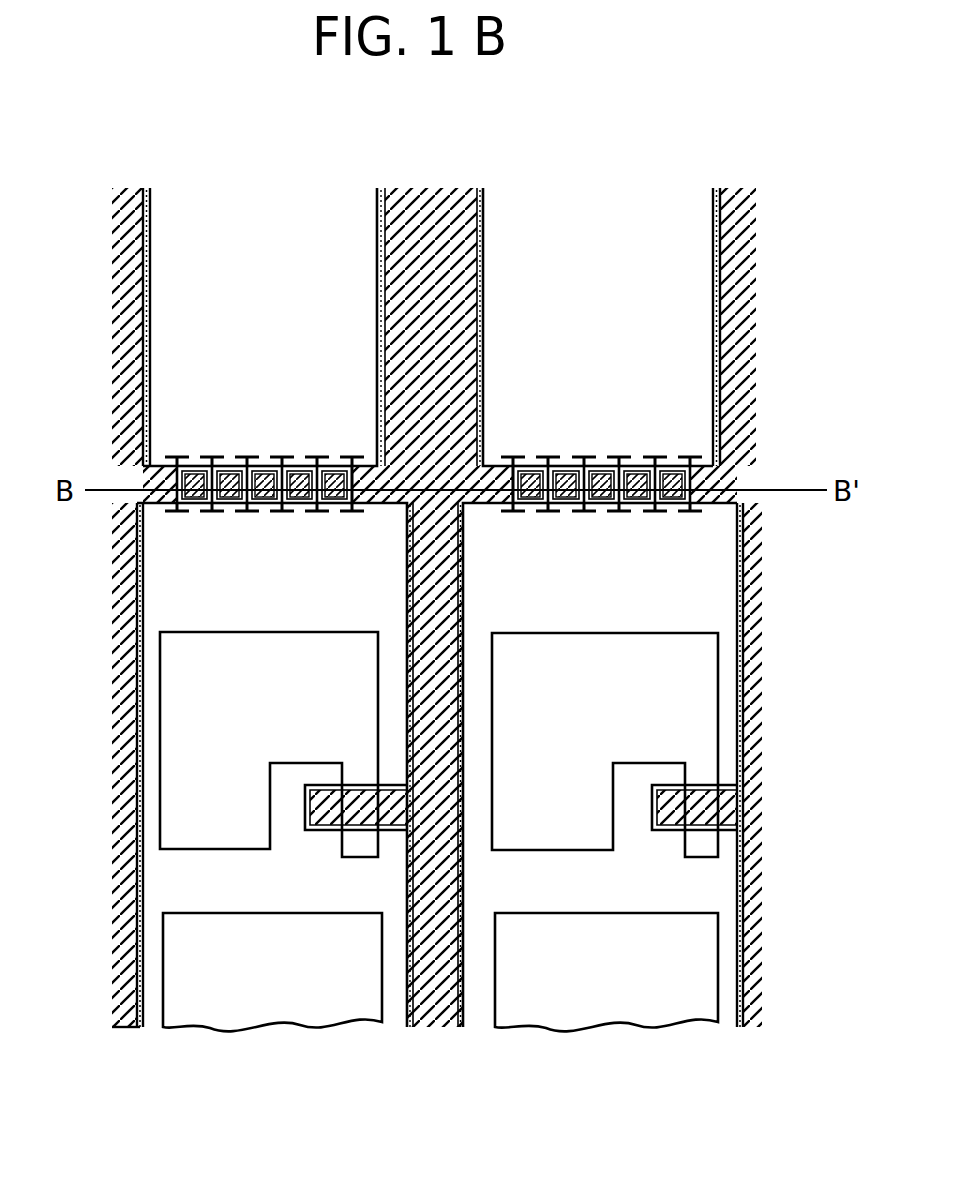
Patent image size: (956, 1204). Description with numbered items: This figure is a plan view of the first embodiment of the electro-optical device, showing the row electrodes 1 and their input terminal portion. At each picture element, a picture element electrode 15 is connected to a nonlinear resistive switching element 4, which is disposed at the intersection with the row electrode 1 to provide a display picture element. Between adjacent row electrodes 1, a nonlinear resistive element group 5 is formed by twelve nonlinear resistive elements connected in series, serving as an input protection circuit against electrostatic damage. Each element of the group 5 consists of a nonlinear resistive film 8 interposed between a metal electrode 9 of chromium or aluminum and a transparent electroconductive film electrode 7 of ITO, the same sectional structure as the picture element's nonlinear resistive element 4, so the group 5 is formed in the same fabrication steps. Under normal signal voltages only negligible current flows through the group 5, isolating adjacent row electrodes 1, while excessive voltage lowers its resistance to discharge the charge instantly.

The row electrode 1 is at (151, 237).
The nonlinear resistive switching element 4 is at (325, 783).
The nonlinear resistive element group 5 is at (372, 517).
The electrode 7 is at (657, 455).
The nonlinear resistive film 8 is at (192, 460).
The metal electrode 9 is at (462, 343).
The picture element electrode 15 is at (232, 640).